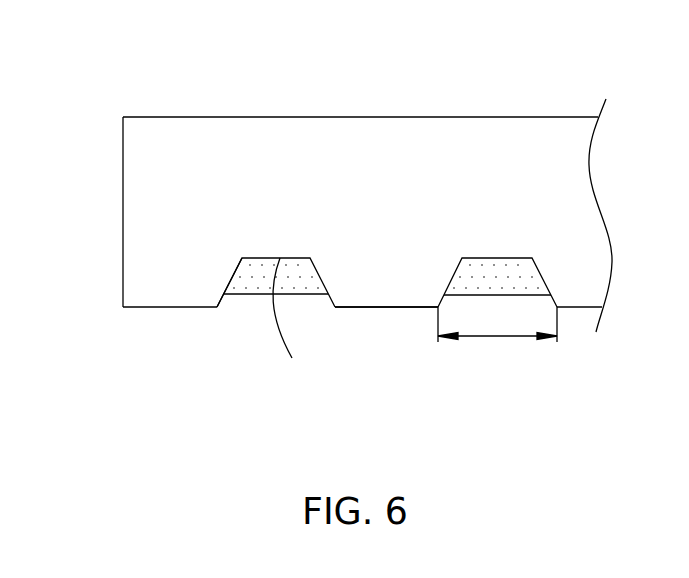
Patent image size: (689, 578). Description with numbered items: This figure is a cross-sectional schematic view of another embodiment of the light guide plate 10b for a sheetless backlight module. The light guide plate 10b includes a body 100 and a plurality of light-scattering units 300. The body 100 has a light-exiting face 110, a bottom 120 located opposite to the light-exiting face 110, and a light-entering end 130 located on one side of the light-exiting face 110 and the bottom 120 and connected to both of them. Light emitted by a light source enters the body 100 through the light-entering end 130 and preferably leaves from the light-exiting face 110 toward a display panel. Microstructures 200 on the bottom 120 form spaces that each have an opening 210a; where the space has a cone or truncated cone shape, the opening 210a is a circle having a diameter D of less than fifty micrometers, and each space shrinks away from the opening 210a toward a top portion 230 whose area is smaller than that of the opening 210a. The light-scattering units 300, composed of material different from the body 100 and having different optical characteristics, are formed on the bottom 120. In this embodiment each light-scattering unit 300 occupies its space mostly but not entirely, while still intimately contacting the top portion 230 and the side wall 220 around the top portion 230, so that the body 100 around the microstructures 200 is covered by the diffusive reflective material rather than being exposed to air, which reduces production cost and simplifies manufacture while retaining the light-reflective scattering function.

The light guide plate 10b is at (90, 38).
The body 100 is at (328, 212).
The light-exiting face 110 is at (360, 117).
The bottom 120 is at (355, 308).
The light-entering end 130 is at (123, 207).
The microstructure 200 is at (236, 326).
The opening 210a is at (333, 308).
The side wall 220 is at (218, 302).
The top portion 230 is at (294, 326).
The light-scattering unit 300 is at (532, 278).
The diameter D is at (497, 340).